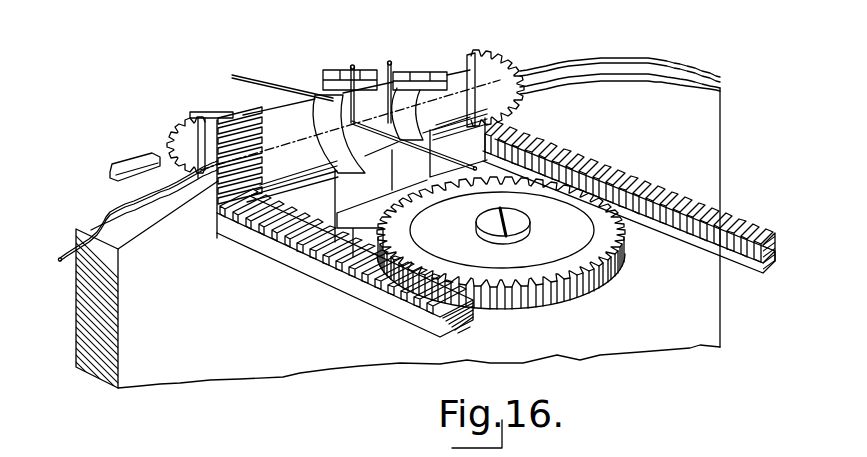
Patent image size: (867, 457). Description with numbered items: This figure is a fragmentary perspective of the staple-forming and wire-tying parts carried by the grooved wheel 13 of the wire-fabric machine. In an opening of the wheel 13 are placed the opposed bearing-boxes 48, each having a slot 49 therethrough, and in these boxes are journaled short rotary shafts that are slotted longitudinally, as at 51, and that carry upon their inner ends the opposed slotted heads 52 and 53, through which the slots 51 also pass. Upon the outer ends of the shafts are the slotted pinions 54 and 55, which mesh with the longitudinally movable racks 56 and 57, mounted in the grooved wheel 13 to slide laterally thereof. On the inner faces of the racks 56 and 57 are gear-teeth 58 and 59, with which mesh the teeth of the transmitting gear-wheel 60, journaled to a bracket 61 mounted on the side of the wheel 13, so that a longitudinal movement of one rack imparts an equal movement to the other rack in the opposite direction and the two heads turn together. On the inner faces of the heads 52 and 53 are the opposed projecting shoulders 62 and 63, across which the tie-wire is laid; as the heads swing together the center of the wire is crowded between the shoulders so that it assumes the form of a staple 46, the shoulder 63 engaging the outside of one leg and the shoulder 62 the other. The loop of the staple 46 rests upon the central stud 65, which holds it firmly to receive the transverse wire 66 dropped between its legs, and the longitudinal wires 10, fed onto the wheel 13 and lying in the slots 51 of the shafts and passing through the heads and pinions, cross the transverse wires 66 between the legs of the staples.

The longitudinal wires 10 is at (67, 245).
The grooved wheel 13 is at (380, 262).
The staple 46 is at (397, 83).
The bearing-boxes 48 is at (350, 136).
The slot 49 is at (266, 111).
The slot 51 is at (325, 76).
The slotted head 52 is at (333, 134).
The slotted head 53 is at (460, 121).
The slotted pinion 54 is at (510, 58).
The slotted pinion 55 is at (183, 130).
The rack 56 is at (405, 313).
The rack 57 is at (756, 232).
The gear-teeth 58 is at (692, 250).
The gear-teeth 59 is at (262, 177).
The transmitting gear-wheel 60 is at (501, 243).
The bracket 61 is at (382, 218).
The projecting shoulder 62 is at (400, 87).
The projecting shoulder 63 is at (366, 63).
The central stud 65 is at (428, 166).
The transverse wire 66 is at (463, 160).